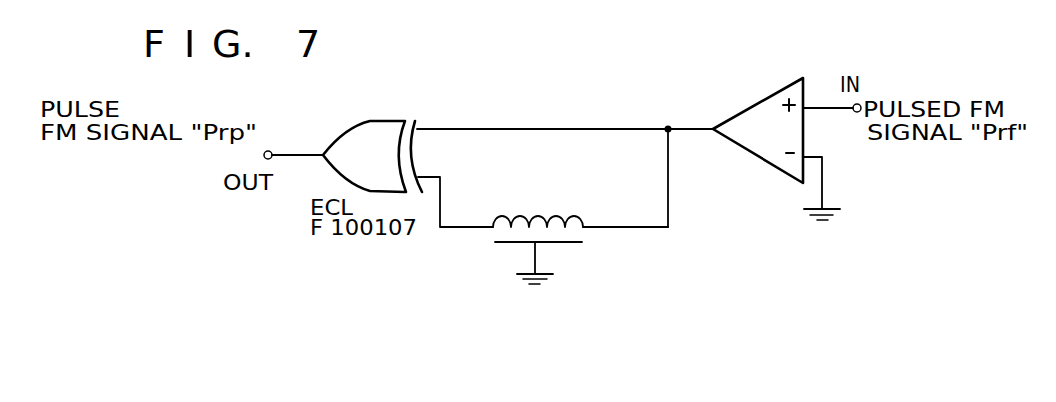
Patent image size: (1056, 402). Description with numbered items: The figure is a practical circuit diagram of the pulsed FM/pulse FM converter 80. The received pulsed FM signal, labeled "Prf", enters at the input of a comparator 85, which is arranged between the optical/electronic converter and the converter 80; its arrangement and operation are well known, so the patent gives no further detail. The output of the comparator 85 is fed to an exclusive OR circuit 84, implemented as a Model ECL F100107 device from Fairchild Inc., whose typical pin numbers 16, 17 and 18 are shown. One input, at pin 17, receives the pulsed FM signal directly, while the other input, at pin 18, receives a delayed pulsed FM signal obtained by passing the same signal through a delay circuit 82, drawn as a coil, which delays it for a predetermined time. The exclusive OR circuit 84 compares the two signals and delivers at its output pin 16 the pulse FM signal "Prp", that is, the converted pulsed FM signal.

The pin number 16 of exclusive OR circuit 16 is at (293, 142).
The pin number 17 of exclusive OR circuit 17 is at (565, 118).
The pin number 18 of exclusive OR circuit 18 is at (455, 190).
The pulsed FM/pulse FM converter 80 is at (700, 307).
The delay circuit 82 is at (578, 249).
The exclusive OR circuit 84 is at (372, 103).
The comparator 85 is at (734, 116).